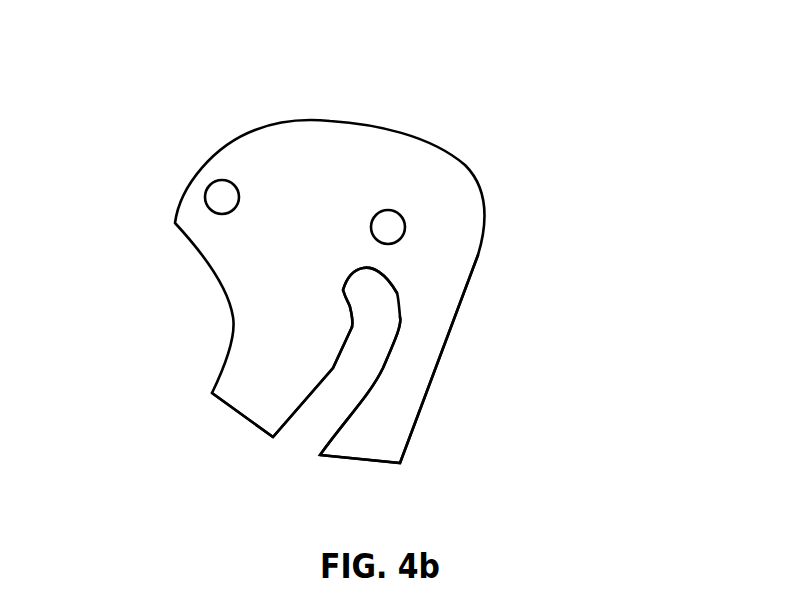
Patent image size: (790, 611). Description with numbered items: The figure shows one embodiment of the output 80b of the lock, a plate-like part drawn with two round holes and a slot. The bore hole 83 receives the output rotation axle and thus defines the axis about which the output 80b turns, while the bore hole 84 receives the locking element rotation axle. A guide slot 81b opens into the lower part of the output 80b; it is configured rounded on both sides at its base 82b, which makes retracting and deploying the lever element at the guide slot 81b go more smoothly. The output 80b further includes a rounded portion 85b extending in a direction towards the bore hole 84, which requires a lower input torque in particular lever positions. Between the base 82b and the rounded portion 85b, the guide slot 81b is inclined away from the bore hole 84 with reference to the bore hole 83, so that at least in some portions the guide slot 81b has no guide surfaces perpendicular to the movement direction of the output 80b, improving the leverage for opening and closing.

The output 80b is at (335, 198).
The bore hole for receiving the locking element rotation axle 84 is at (222, 198).
The bore hole for receiving the output rotation axle 83 is at (388, 227).
The rounded portion 85b is at (362, 287).
The guide slot 81b is at (350, 368).
The base 82b is at (298, 437).